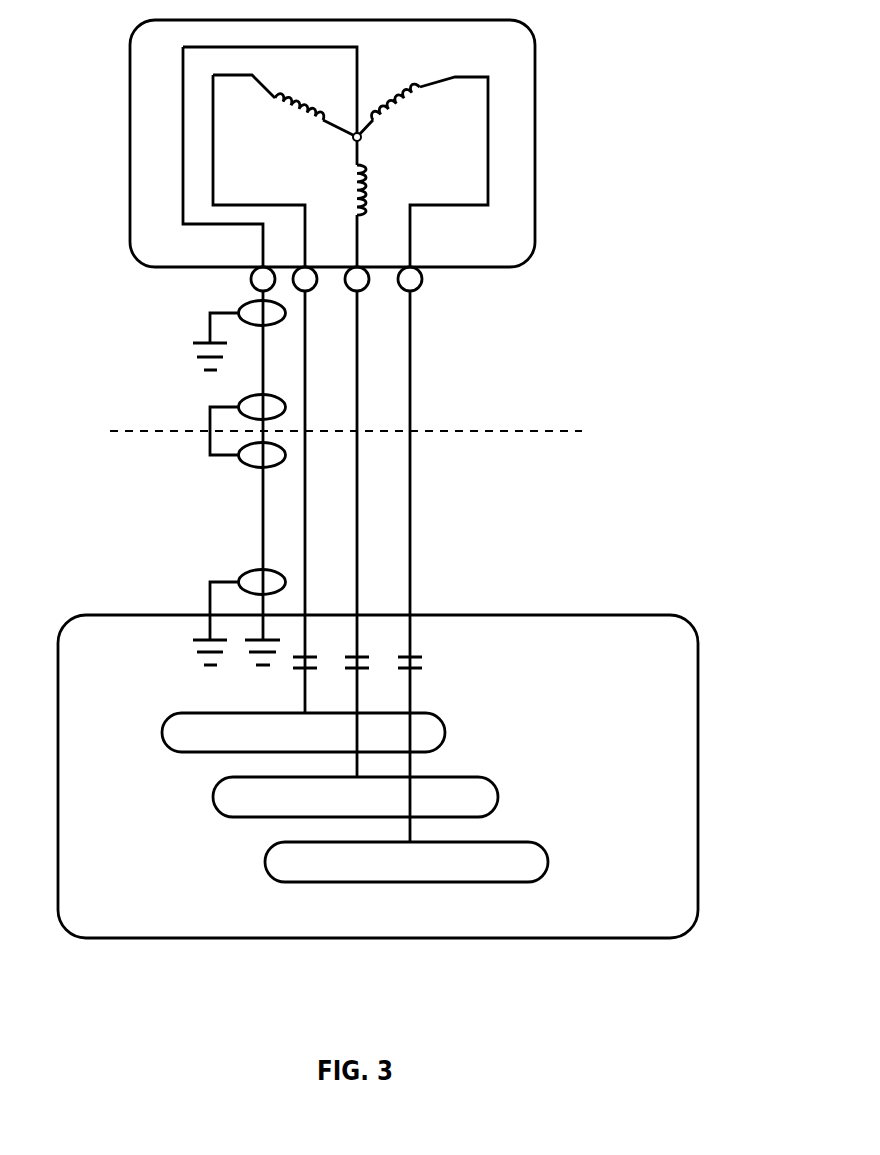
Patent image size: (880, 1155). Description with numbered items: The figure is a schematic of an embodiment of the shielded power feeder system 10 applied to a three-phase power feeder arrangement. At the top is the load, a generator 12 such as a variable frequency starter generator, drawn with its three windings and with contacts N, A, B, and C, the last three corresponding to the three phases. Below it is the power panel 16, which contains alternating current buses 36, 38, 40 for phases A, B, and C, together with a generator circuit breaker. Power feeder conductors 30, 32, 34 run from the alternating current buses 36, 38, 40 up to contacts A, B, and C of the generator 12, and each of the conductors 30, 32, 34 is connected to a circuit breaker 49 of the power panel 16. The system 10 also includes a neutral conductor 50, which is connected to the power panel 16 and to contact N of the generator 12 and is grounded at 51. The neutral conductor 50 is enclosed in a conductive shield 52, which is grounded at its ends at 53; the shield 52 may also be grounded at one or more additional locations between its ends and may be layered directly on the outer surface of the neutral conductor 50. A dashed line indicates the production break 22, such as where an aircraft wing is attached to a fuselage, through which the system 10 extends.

The shielded power feeder system 10 is at (342, 541).
The generator 12 is at (538, 82).
The power panel 16 is at (660, 615).
The production break 22 is at (117, 430).
The power feeder conductor 30 is at (305, 552).
The power feeder conductor 32 is at (357, 546).
The power feeder conductor 34 is at (412, 578).
The alternating current bus 36 is at (185, 712).
The alternating current bus 38 is at (475, 777).
The alternating current bus 40 is at (527, 842).
The circuit breaker 49 is at (307, 675).
The neutral conductor 50 is at (262, 505).
The neutral conductor ground 51 is at (253, 657).
The conductive shield 52 is at (283, 322).
The shield ground 53 is at (205, 340).